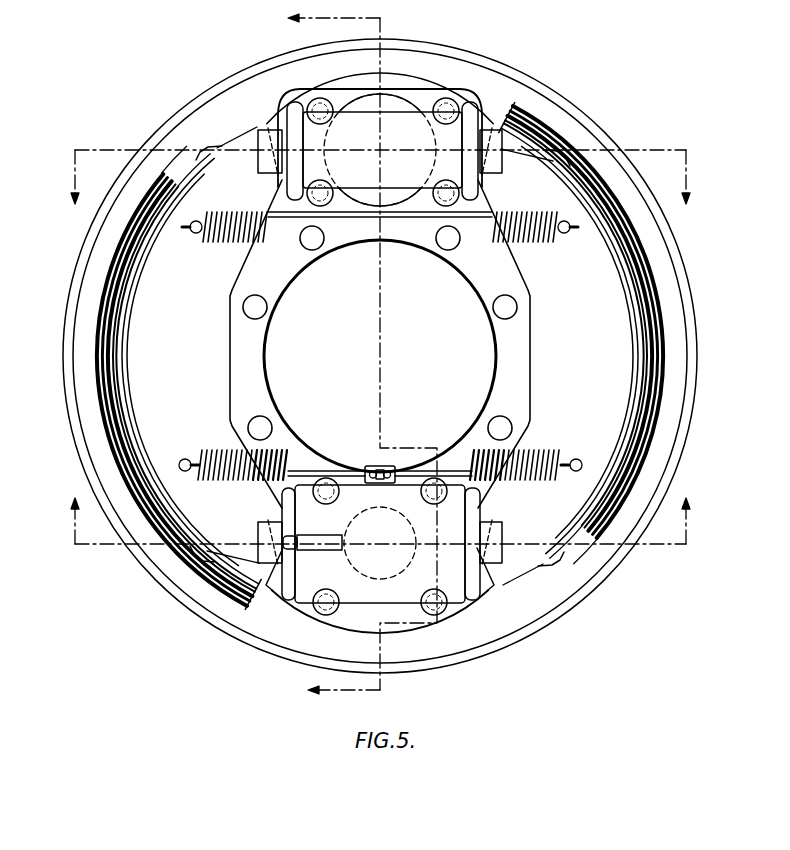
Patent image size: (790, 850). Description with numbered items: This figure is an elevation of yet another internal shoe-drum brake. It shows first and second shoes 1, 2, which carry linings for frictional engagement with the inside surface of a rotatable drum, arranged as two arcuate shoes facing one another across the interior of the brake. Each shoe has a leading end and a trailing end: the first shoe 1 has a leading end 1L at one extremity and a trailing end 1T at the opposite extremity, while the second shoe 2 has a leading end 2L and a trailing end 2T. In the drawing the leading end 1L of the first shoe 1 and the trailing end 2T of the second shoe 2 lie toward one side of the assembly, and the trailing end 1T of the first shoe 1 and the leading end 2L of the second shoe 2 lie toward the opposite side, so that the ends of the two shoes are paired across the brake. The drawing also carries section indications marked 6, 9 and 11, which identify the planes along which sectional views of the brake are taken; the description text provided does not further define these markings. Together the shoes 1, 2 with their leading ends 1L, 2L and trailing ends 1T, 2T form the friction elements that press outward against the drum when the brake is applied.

The first shoe 1 is at (190, 357).
The second shoe 2 is at (583, 357).
The leading end of first shoe 1L is at (241, 202).
The trailing end of second shoe 2T is at (537, 202).
The trailing end of first shoe 1T is at (230, 541).
The leading end of second shoe 2L is at (541, 541).
The section line 6- 6 is at (379, 509).
The section line 9- 9 is at (381, 190).
The section line 11- 11 is at (350, 355).